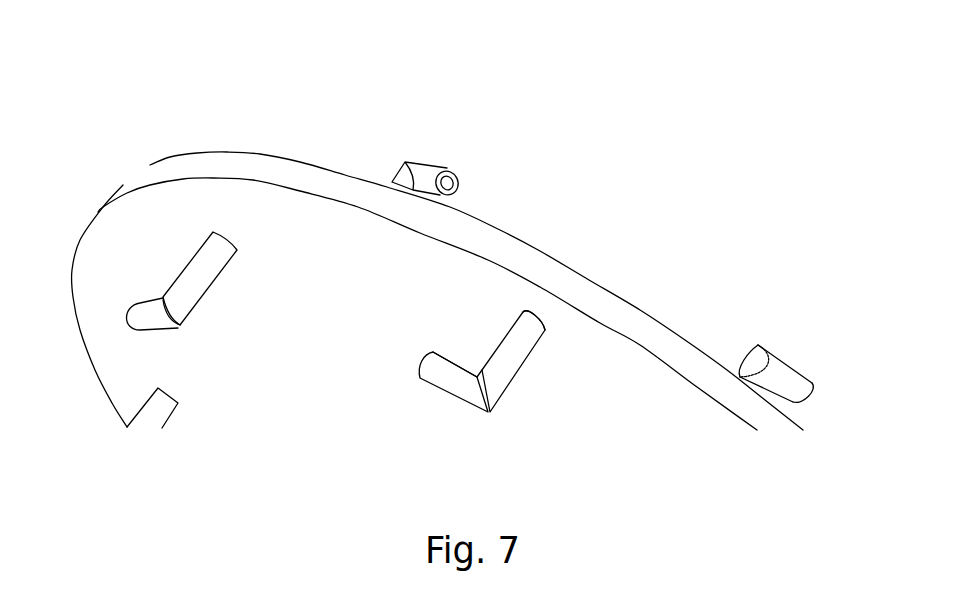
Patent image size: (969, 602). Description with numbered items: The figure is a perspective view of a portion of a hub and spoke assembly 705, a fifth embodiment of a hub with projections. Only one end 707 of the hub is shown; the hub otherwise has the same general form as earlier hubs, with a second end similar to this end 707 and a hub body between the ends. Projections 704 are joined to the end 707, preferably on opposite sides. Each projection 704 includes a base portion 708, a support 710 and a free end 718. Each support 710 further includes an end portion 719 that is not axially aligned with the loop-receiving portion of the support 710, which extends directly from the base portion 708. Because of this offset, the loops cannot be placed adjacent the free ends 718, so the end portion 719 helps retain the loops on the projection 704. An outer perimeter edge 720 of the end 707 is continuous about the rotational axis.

The projection 704 is at (525, 239).
The hub and spoke assembly 705 is at (150, 153).
The end of hub 707 is at (677, 300).
The base portion 708 is at (538, 315).
The support 710 is at (527, 338).
The free end 718 is at (418, 362).
The end portion 719 is at (458, 370).
The outer perimeter edge 720 is at (197, 152).